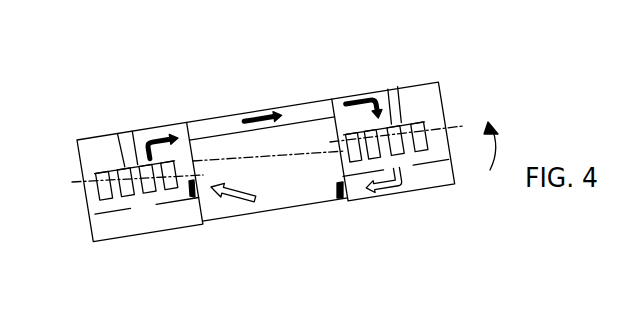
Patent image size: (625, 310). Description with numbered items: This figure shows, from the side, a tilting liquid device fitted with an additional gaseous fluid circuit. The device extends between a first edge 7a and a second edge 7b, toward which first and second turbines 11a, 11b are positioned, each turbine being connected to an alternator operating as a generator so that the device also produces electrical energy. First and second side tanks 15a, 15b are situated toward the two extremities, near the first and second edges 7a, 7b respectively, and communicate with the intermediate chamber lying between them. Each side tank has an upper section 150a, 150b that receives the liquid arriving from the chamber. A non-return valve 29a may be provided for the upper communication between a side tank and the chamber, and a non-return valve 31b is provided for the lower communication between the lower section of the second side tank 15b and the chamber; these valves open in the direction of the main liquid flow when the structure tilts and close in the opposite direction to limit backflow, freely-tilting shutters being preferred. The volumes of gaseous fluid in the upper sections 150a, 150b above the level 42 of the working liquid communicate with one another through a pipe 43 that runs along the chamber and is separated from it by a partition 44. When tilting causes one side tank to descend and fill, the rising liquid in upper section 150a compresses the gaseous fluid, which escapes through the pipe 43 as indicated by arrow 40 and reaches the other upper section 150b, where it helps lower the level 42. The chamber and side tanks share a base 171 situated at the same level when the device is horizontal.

The first edge 7a is at (91, 243).
The second edge 7b is at (455, 166).
The first turbine 11a is at (132, 150).
The second turbine 11b is at (389, 90).
The first side tank 15a is at (175, 214).
The second side tank 15b is at (424, 183).
The non-return valve 29a is at (197, 192).
The non-return valve 31b is at (337, 195).
The arrow 40 is at (264, 113).
The level of the working liquid 42 is at (72, 183).
The pipe 43 is at (220, 128).
The partition 44 is at (270, 128).
The upper section of first side tank 150a is at (85, 153).
The upper section of second side tank 150b is at (422, 100).
The base 171 is at (289, 216).